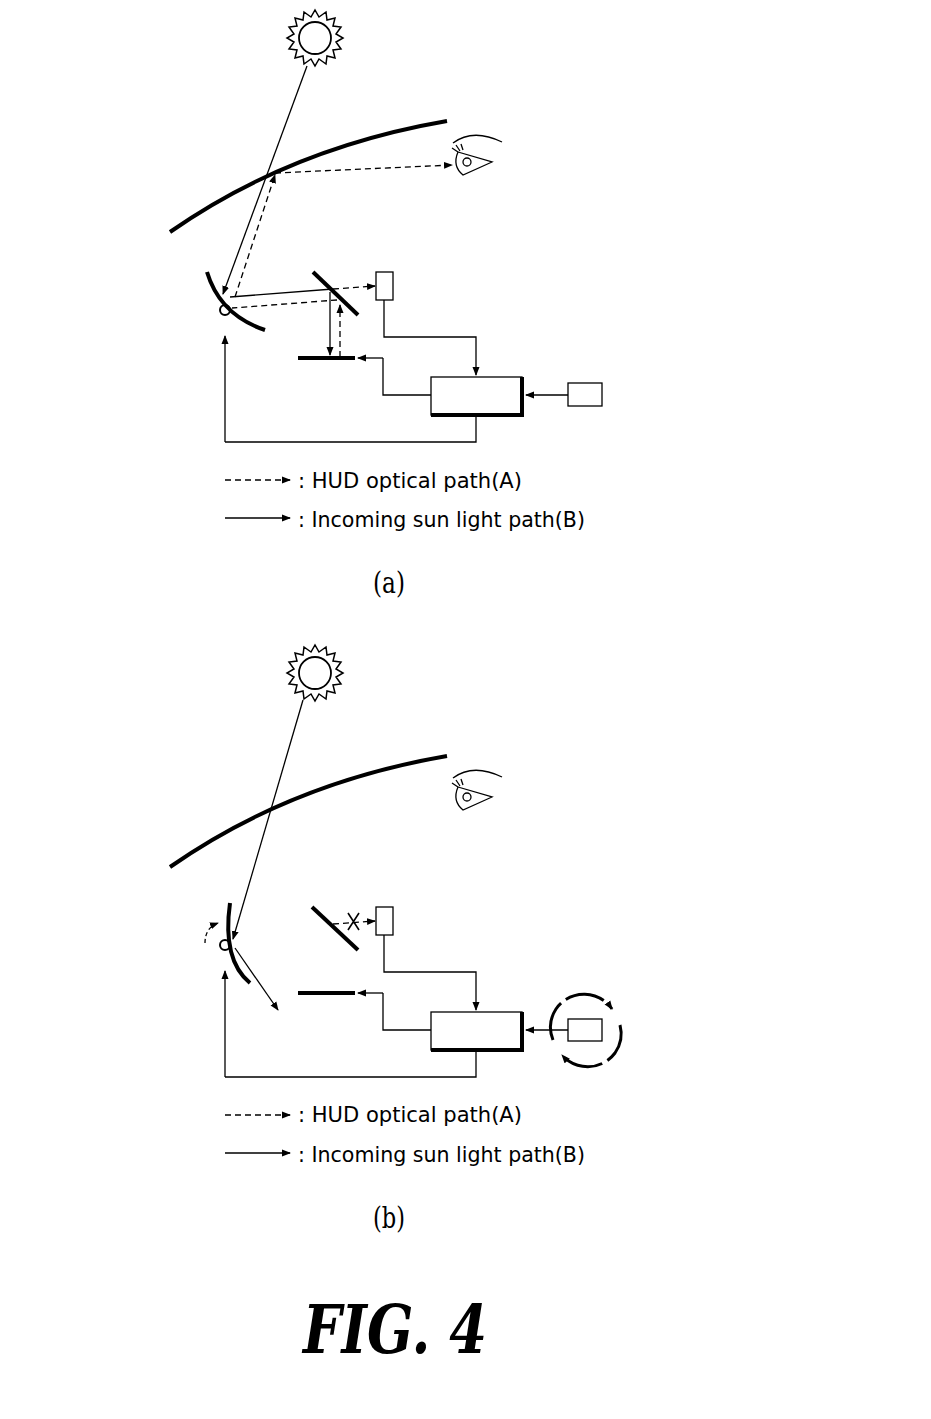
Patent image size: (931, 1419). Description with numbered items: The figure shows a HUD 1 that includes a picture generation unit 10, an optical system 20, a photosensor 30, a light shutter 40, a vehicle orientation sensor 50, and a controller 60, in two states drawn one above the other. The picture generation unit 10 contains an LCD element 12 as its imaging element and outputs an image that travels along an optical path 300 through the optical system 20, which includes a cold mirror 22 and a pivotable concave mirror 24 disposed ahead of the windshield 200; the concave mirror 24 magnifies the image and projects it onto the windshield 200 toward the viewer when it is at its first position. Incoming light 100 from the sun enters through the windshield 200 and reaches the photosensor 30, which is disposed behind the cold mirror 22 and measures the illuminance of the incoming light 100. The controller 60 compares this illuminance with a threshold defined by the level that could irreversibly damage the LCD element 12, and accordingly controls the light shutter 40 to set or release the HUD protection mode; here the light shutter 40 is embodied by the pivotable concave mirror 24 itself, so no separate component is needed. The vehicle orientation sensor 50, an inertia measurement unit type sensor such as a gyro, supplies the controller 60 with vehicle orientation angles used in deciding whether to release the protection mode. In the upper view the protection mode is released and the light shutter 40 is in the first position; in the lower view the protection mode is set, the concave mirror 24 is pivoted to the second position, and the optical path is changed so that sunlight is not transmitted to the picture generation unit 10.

The HUD 1 is at (93, 28).
The picture generation unit 10 is at (306, 391).
The LCD element 12 is at (317, 362).
The optical system 20 is at (358, 220).
The cold mirror 22 is at (330, 278).
The concave mirror 24 is at (253, 297).
The photosensor 30 is at (393, 283).
The light shutter 40 is at (212, 322).
The vehicle orientation sensor 50 is at (587, 383).
The controller 60 is at (493, 375).
The incoming light 100 is at (284, 125).
The windshield 200 is at (385, 127).
The optical path 300 is at (280, 306).